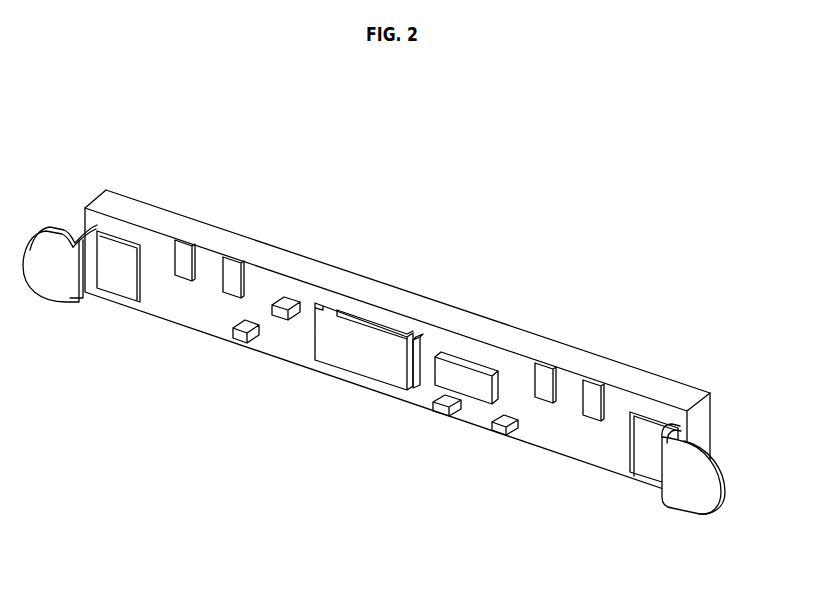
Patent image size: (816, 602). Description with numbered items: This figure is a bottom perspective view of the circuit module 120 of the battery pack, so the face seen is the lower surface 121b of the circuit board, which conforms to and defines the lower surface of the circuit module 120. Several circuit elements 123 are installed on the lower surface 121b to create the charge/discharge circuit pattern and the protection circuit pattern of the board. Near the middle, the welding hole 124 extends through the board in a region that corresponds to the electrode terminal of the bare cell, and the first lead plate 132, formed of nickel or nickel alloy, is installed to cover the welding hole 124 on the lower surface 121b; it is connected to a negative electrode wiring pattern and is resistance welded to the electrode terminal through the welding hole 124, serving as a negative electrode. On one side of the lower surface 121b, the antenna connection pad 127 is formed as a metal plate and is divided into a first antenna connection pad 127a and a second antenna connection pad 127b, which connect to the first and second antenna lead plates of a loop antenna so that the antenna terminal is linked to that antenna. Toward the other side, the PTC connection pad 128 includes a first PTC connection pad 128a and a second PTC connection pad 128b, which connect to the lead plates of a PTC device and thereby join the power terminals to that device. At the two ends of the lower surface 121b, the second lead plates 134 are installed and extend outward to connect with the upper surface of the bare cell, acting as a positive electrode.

The circuit module 120 is at (393, 347).
The lower surface 121b is at (432, 337).
The circuit elements 123 is at (241, 341).
The welding hole 124 is at (352, 313).
The first lead plate 132 is at (372, 347).
The antenna connection pad 127 is at (231, 213).
The first antenna connection pad 127a is at (183, 253).
The second antenna connection pad 127b is at (232, 270).
The PTC connection pad 128 is at (592, 335).
The first PTC connection pad 128a is at (594, 395).
The second PTC connection pad 128b is at (547, 378).
The second lead plates 134 is at (53, 288).